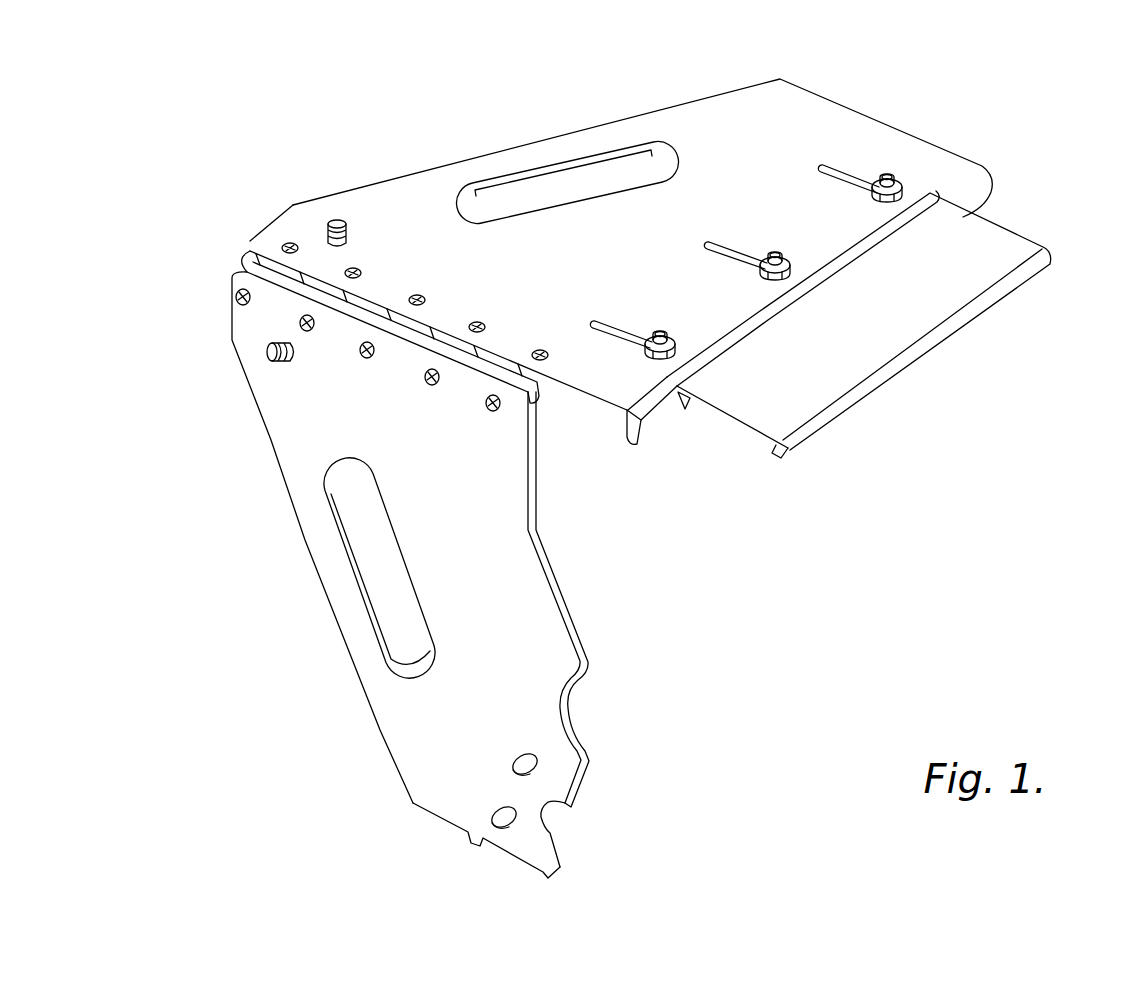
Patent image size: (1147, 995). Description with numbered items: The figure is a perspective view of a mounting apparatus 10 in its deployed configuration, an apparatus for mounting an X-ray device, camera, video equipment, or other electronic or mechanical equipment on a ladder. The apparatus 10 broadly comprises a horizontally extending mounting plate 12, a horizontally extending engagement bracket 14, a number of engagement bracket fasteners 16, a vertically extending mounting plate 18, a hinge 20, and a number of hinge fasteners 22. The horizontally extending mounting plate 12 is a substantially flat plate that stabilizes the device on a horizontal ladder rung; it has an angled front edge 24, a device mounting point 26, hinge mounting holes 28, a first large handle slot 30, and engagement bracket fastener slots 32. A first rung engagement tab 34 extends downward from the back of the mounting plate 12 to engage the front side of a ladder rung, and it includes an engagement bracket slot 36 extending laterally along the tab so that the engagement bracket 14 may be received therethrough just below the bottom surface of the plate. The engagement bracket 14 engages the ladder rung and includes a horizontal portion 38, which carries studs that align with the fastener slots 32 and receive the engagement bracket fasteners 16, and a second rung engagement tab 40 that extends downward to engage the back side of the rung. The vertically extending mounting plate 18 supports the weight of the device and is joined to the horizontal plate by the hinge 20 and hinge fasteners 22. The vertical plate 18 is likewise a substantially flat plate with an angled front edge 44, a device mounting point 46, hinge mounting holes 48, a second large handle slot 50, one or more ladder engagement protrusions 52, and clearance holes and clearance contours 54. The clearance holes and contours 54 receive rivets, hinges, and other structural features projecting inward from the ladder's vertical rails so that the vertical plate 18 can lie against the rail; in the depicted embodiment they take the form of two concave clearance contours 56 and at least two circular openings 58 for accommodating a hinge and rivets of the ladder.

The mounting apparatus 10 is at (258, 106).
The horizontally extending mounting plate 12 is at (660, 90).
The horizontally extending engagement bracket 14 is at (1035, 222).
The engagement bracket fasteners 16 is at (888, 178).
The vertically extending mounting plate 18 is at (270, 461).
The hinge 20 is at (238, 253).
The hinge fasteners 22 is at (358, 274).
The angled front edge 24 is at (487, 153).
The device mounting point 26 is at (333, 217).
The hinge mounting holes 28 is at (540, 350).
The first large handle slot 30 is at (560, 187).
The engagement bracket fastener slots 32 is at (830, 178).
The first rung engagement tab 34 is at (642, 433).
The engagement bracket slot 36 is at (688, 413).
The horizontal portion 38 is at (925, 303).
The second rung engagement tab 40 is at (788, 454).
The angled front edge 44 is at (358, 670).
The device mounting point 46 is at (268, 358).
The hinge mounting holes 48 is at (367, 358).
The second large handle slot 50 is at (380, 555).
The ladder engagement protrusions 52 is at (480, 847).
The clearance holes and clearance contours 54 is at (620, 782).
The concave clearance contours 56 is at (575, 711).
The circular openings 58 is at (500, 810).